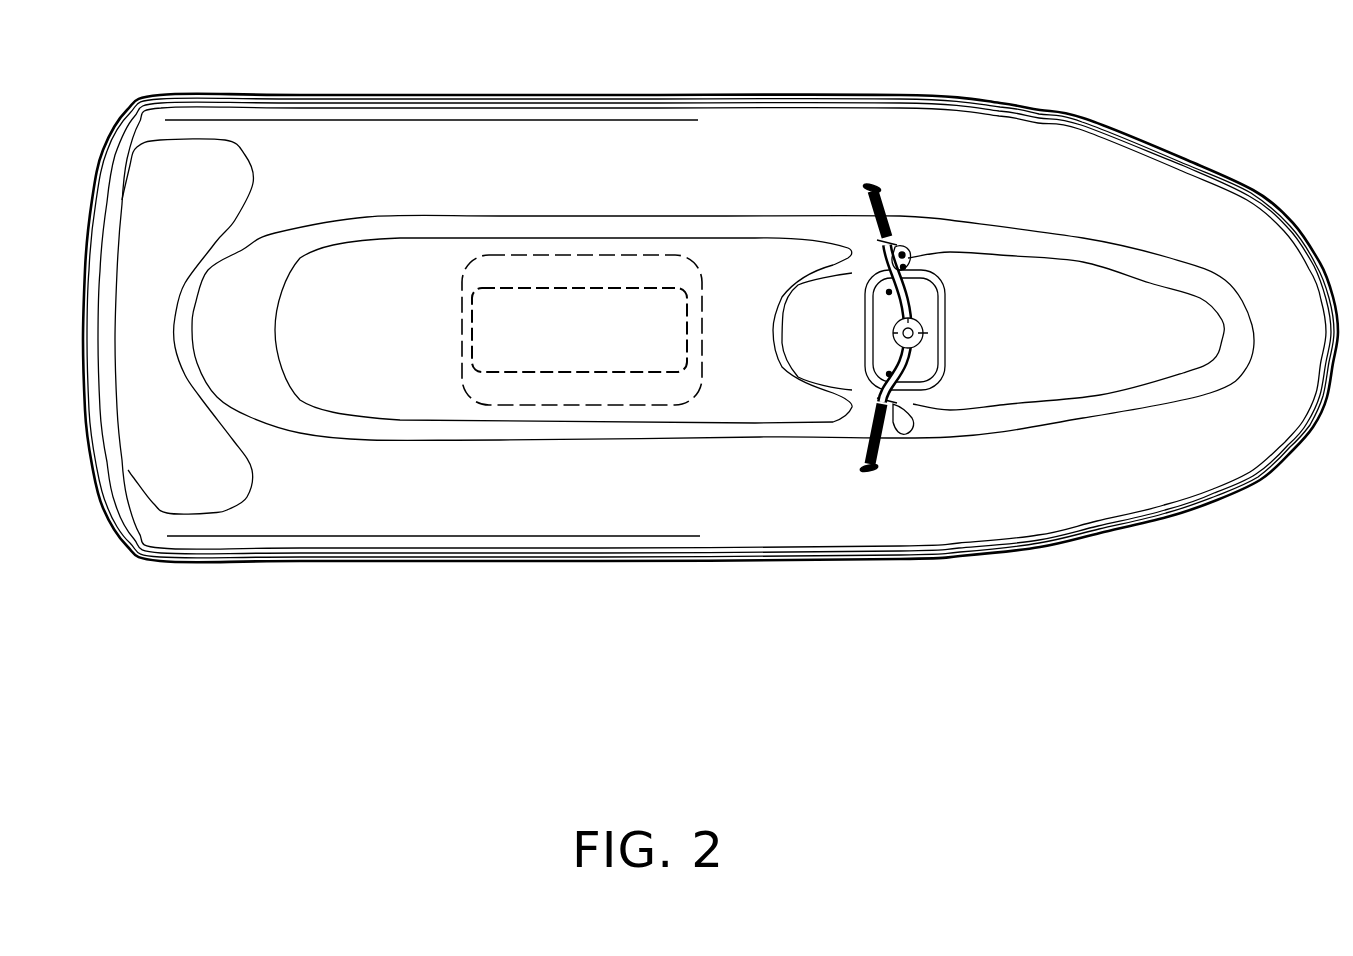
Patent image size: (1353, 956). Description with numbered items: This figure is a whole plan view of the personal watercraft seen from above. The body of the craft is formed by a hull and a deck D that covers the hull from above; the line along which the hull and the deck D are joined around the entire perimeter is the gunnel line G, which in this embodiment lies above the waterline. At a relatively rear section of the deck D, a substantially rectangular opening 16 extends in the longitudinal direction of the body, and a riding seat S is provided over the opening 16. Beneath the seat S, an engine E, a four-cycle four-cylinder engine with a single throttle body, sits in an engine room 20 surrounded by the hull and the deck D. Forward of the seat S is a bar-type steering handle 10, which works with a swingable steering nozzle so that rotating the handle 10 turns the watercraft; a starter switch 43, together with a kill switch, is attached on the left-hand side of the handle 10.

The steering handle 10 is at (890, 205).
The opening 16 is at (573, 258).
The engine room 20 is at (641, 270).
The starter switch 43 is at (906, 256).
The deck D is at (1016, 122).
The gunnel line G is at (1193, 156).
The riding seat S is at (345, 398).
The engine E is at (582, 338).